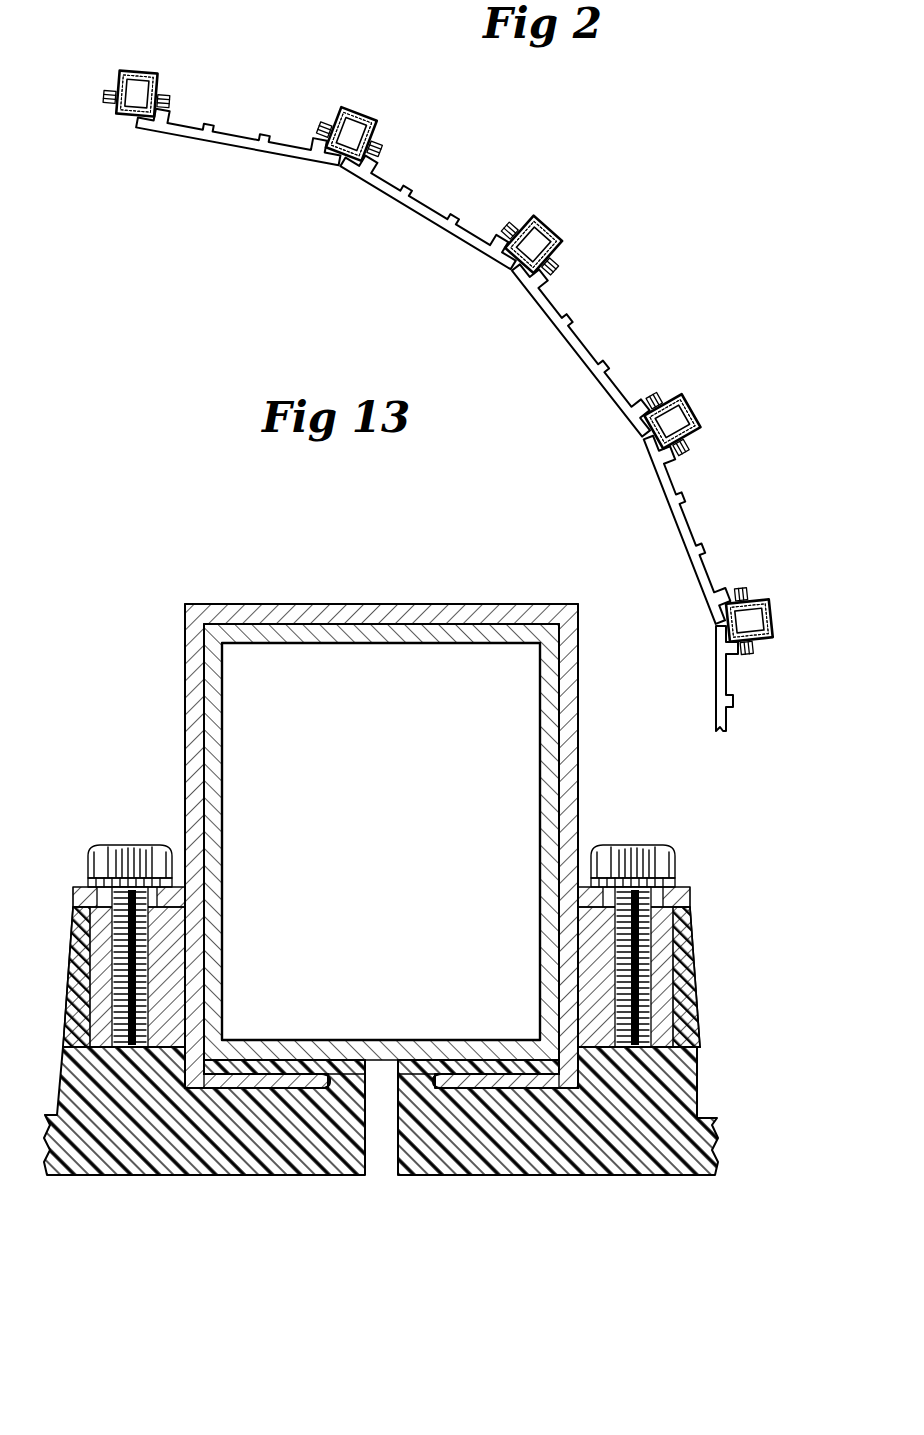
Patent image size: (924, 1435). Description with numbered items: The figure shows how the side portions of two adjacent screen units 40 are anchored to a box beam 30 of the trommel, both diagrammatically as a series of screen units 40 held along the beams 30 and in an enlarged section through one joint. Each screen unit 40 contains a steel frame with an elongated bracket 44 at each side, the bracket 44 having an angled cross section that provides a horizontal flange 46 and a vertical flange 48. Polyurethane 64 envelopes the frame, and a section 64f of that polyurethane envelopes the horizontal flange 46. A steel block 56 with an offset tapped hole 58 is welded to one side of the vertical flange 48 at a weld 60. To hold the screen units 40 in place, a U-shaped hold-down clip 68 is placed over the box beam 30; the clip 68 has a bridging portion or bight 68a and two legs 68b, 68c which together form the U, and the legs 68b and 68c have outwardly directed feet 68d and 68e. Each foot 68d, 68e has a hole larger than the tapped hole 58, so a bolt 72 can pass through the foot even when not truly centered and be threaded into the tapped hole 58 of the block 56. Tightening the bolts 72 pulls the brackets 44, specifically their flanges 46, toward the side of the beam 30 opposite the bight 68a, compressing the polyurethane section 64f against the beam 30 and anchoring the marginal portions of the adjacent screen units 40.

In FIG. 2, the box beam 30 is at (120, 114).
In FIG. 13, the box beam 30 is at (352, 643).
In FIG. 2, the screen unit 40 is at (230, 150).
In FIG. 13, the screen unit 40 is at (366, 1120).
In FIG. 13, the bracket 44 is at (202, 1088).
In FIG. 13, the horizontal flange 46 is at (242, 1080).
In FIG. 13, the vertical flange 48 is at (196, 937).
In FIG. 13, the steel block 56 is at (88, 980).
In FIG. 13, the tapped hole 58 is at (120, 1045).
In FIG. 13, the weld 60 is at (160, 1050).
In FIG. 13, the polyurethane 64 is at (238, 1145).
In FIG. 13, the polyurethane section 64f is at (288, 1064).
In FIG. 2, the hold-down clip 68 is at (125, 70).
In FIG. 13, the hold-down clip 68 is at (388, 808).
In FIG. 13, the bight 68a is at (380, 604).
In FIG. 13, the leg 68b is at (185, 672).
In FIG. 13, the leg 68c is at (578, 765).
In FIG. 13, the foot 68d is at (73, 887).
In FIG. 13, the foot 68e is at (688, 893).
In FIG. 2, the bolt 72 is at (166, 96).
In FIG. 13, the bolt 72 is at (128, 845).